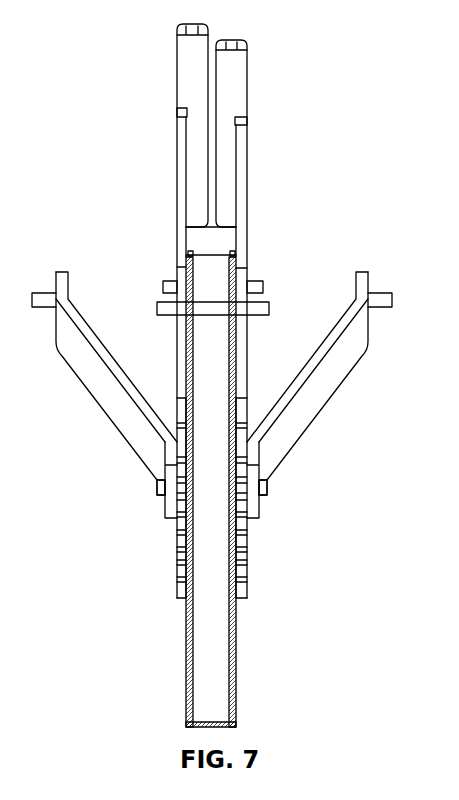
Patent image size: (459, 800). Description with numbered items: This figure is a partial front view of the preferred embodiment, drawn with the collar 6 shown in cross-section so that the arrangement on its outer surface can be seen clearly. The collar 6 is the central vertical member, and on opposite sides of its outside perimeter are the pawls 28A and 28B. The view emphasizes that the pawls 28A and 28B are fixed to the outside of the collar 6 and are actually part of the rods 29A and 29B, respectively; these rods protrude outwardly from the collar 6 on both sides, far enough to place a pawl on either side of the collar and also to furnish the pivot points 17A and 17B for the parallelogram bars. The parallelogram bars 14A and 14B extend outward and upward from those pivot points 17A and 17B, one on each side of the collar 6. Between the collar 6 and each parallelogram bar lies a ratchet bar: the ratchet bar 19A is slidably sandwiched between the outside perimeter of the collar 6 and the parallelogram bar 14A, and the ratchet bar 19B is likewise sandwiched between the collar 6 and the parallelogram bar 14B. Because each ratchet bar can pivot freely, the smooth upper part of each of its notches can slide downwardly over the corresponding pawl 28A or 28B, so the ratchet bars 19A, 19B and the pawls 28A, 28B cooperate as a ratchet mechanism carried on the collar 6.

The collar 6 is at (188, 628).
The parallelogram bar 14A is at (333, 380).
The parallelogram bar 14B is at (107, 387).
The pivot point 17A is at (266, 486).
The pivot point 17B is at (160, 487).
The rod 29A is at (263, 487).
The rod 29B is at (161, 487).
The pawl 28A is at (258, 493).
The pawl 28B is at (177, 493).
The ratchet bar 19A is at (248, 538).
The ratchet bar 19B is at (184, 531).